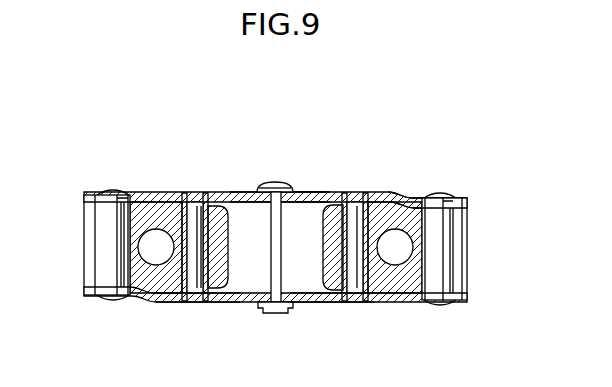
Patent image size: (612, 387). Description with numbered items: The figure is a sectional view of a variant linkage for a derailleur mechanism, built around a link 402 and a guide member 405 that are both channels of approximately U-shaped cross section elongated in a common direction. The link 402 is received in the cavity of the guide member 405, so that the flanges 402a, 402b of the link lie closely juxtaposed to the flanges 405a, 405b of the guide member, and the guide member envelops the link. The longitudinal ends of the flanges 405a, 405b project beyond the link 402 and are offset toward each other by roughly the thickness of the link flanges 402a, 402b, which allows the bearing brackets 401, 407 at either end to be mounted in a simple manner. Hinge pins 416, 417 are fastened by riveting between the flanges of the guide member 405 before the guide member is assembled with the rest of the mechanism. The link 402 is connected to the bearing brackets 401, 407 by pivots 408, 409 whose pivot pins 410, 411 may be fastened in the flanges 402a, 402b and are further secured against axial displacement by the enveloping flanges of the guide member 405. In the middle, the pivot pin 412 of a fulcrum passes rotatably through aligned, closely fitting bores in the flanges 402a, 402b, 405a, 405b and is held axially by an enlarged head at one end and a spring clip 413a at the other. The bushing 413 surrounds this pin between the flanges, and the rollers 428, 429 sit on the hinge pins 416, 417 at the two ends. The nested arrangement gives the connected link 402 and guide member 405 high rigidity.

The bearing bracket 401 is at (143, 192).
The link 402 is at (332, 302).
The flange of the link 402a is at (247, 192).
The flange of the link 402b is at (302, 302).
The guide member 405 is at (148, 301).
The flange of the guide member 405a is at (210, 192).
The flange of the guide member 405b is at (222, 302).
The bearing bracket 407 is at (394, 196).
The pivot 408 is at (181, 185).
The pivot 409 is at (357, 186).
The pivot pin 410 is at (196, 302).
The pivot pin 411 is at (360, 302).
The pivot pin of the fulcrum 412 is at (282, 174).
The bushing 413 is at (302, 192).
The spring clip 413a is at (260, 313).
The hinge pin 416 is at (440, 228).
The hinge pin 417 is at (110, 230).
The roller sleeve 428 is at (458, 270).
The roller sleeve 429 is at (92, 262).